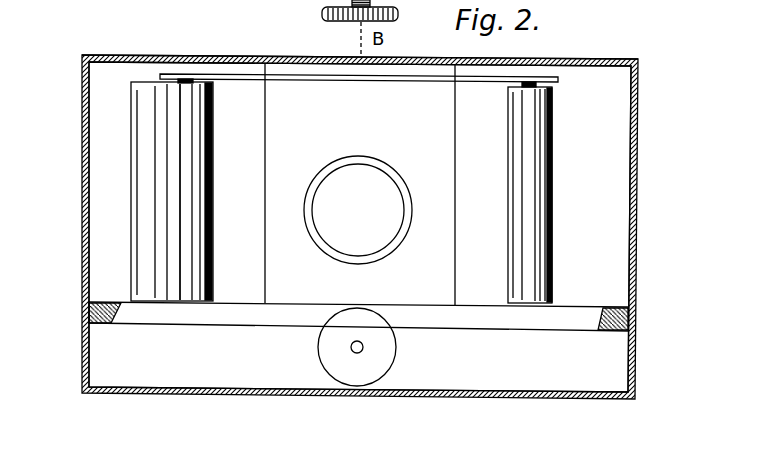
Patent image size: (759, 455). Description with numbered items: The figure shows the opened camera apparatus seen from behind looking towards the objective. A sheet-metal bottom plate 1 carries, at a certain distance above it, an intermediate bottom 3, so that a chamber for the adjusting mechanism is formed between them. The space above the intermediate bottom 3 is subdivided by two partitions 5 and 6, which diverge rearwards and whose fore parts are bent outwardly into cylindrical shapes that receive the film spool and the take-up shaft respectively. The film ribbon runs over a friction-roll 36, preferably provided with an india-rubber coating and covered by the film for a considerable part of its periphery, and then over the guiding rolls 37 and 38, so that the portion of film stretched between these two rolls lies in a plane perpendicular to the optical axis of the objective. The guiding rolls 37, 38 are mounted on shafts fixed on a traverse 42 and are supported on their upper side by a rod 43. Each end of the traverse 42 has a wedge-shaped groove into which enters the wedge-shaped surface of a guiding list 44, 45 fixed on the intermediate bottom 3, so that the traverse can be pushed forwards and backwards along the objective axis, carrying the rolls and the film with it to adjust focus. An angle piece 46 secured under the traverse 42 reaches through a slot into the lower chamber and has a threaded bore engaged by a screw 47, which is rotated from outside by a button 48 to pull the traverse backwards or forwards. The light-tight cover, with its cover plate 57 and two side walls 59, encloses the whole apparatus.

The bottom plate 1 is at (556, 400).
The intermediate bottom 3 is at (465, 328).
The partition 5 is at (253, 278).
The partition 6 is at (473, 278).
The friction-roll 36 is at (143, 222).
The guiding roll 37 is at (177, 172).
The guiding roll 38 is at (539, 135).
The traverse 42 is at (222, 317).
The rod 43 is at (313, 77).
The guiding list 44 is at (87, 315).
The guiding list 45 is at (634, 320).
The angle piece 46 is at (51, 4).
The screw 47 is at (351, 349).
The button 48 is at (338, 22).
The cover plate 57 is at (237, 56).
The side walls 59 is at (84, 150).